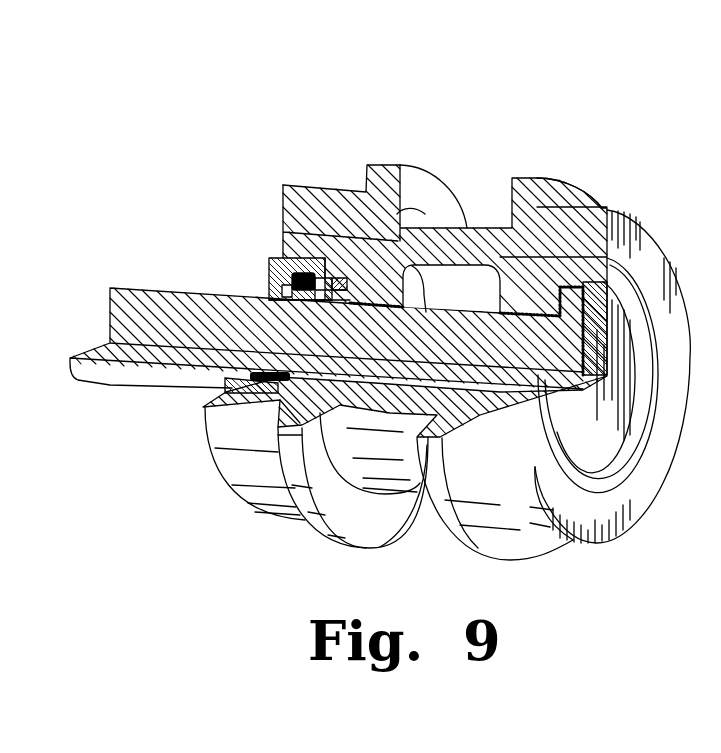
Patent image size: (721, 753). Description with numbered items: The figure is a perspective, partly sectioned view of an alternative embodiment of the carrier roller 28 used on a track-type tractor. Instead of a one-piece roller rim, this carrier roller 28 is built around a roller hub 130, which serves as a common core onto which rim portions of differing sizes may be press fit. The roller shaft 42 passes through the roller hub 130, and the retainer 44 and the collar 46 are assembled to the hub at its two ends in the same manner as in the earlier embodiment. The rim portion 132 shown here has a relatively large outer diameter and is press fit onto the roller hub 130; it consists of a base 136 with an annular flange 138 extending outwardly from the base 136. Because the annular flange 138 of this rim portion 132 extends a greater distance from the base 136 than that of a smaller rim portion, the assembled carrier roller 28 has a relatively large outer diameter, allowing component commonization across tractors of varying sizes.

The carrier roller 28 is at (613, 150).
The roller shaft 42 is at (170, 297).
The retainer 44 is at (605, 448).
The collar 46 is at (267, 262).
The roller hub 130 is at (480, 230).
The rim portion 132 is at (417, 182).
The base 136 is at (602, 207).
The annular flange 138 is at (553, 188).